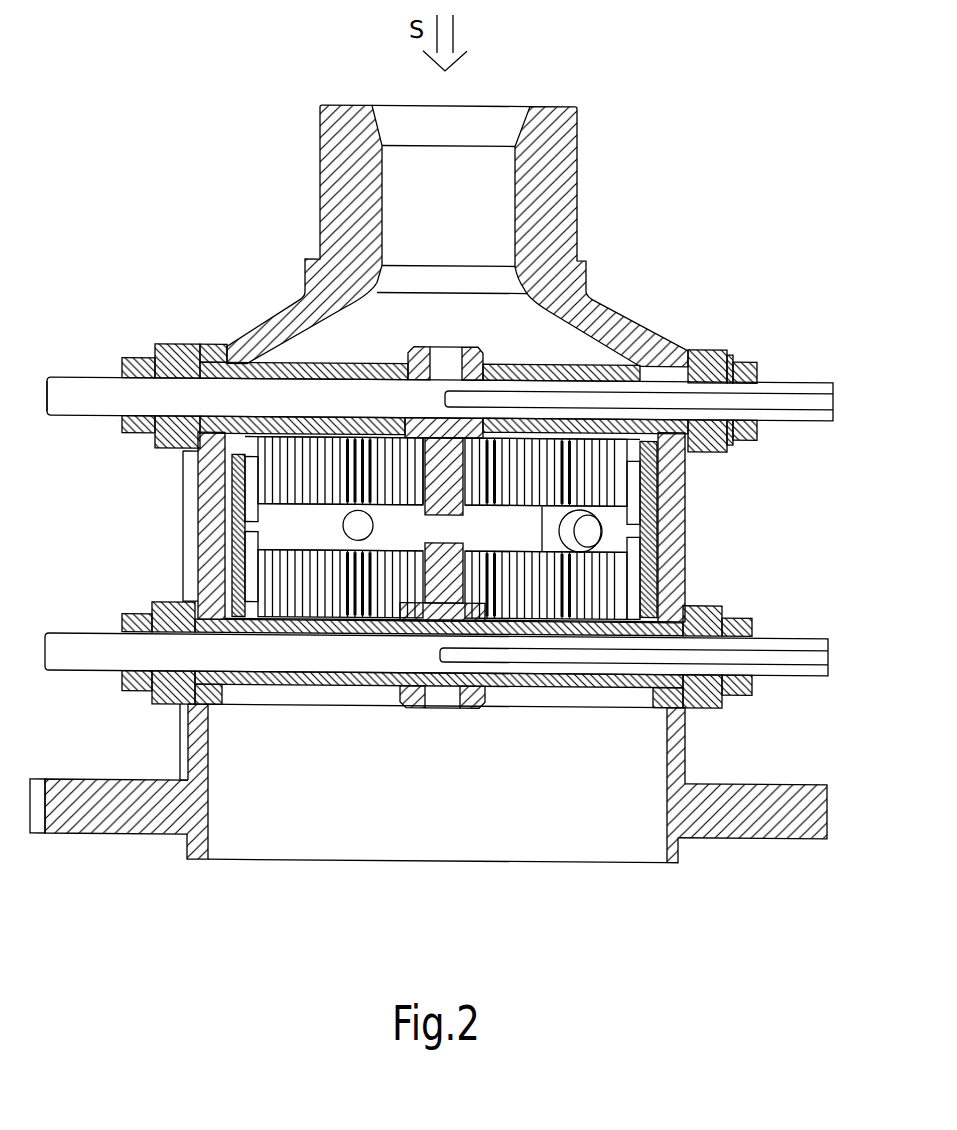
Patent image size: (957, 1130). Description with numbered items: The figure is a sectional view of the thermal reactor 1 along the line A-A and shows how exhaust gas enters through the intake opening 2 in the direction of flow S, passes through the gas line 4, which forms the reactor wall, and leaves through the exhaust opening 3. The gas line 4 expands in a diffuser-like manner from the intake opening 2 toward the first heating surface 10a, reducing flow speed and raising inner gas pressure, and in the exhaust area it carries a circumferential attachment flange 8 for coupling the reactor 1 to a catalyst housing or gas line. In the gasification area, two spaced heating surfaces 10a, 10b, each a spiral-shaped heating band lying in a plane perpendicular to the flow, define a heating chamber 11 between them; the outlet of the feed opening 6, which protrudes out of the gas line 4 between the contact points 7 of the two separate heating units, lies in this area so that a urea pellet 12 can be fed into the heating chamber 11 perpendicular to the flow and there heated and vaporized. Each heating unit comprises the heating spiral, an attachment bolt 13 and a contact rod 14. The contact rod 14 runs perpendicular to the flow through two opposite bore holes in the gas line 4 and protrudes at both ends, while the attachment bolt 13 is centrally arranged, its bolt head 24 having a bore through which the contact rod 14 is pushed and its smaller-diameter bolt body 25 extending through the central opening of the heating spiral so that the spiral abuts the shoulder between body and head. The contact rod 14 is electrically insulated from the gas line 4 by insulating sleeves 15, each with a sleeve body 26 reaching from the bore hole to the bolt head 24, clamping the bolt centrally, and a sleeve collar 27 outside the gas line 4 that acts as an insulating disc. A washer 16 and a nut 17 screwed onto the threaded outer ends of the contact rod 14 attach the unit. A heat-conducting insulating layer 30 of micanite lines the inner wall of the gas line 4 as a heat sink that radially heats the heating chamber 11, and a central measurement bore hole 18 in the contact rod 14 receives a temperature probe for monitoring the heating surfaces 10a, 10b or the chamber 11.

The reactor 1 is at (627, 61).
The intake opening 2 is at (495, 112).
The exhaust opening 3 is at (365, 841).
The gas line 4 is at (673, 531).
The feed opening 6 is at (625, 543).
The contact points 7 is at (53, 350).
The attachment flange 8 is at (738, 822).
The heating surface 10a is at (622, 466).
The heating surface 10b is at (622, 581).
The heating chamber 11 is at (270, 538).
The urea pellet 12 is at (350, 520).
The attachment bolt 13 is at (455, 331).
The contact rod 14 is at (93, 385).
The insulating sleeve 15 is at (190, 336).
The washer 16 is at (728, 344).
The nut 17 is at (748, 357).
The measurement bore hole 18 is at (812, 393).
The bolt head 24 is at (483, 351).
The bolt body 25 is at (425, 465).
The sleeve body 26 is at (263, 355).
The sleeve collar 27 is at (170, 343).
The insulating layer 30 is at (653, 494).